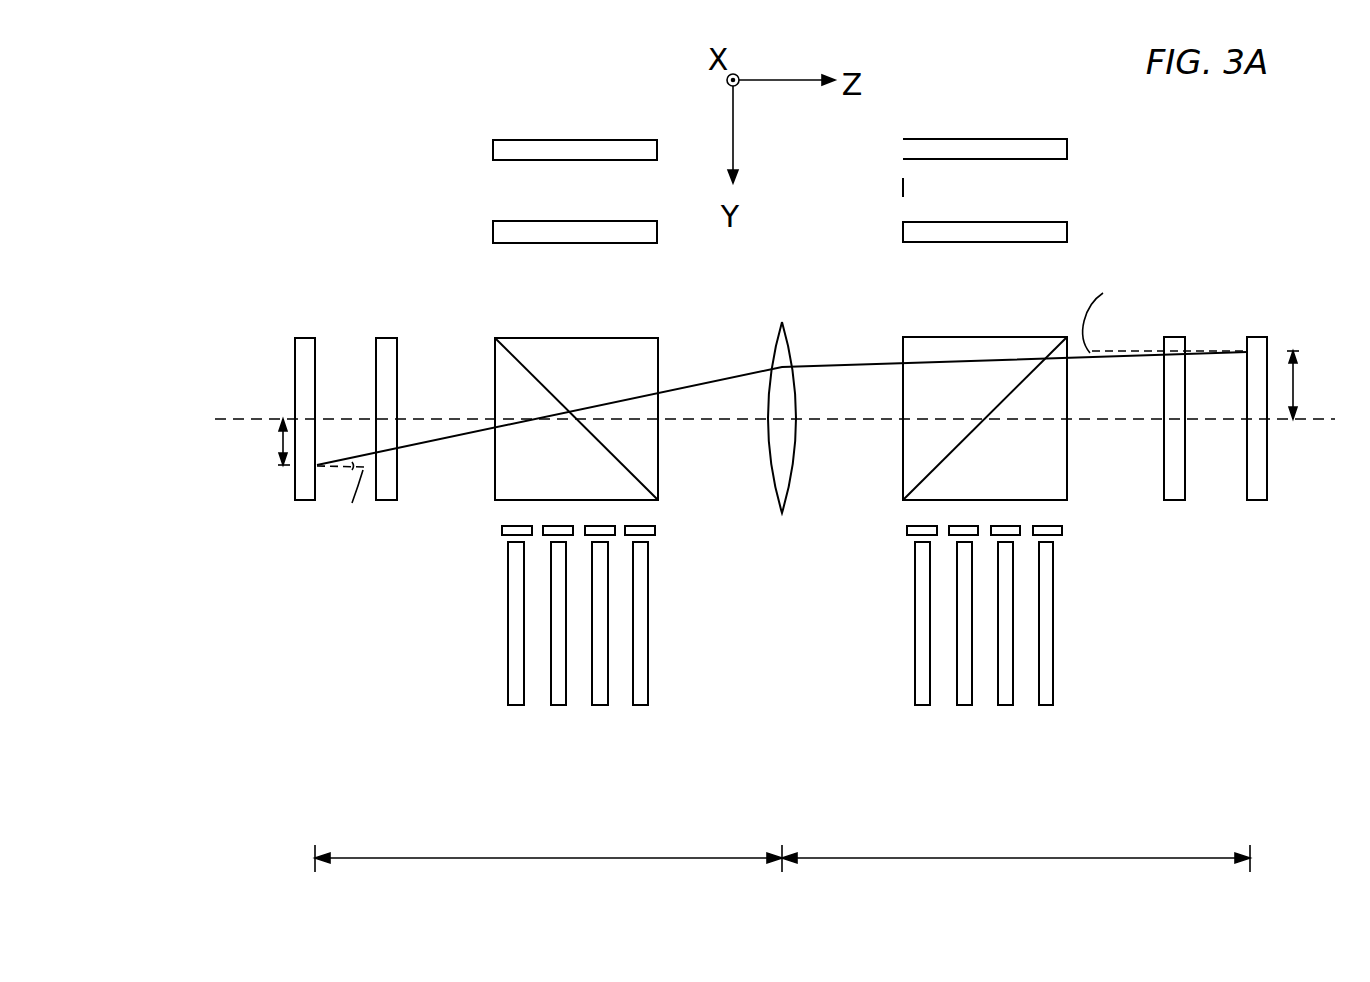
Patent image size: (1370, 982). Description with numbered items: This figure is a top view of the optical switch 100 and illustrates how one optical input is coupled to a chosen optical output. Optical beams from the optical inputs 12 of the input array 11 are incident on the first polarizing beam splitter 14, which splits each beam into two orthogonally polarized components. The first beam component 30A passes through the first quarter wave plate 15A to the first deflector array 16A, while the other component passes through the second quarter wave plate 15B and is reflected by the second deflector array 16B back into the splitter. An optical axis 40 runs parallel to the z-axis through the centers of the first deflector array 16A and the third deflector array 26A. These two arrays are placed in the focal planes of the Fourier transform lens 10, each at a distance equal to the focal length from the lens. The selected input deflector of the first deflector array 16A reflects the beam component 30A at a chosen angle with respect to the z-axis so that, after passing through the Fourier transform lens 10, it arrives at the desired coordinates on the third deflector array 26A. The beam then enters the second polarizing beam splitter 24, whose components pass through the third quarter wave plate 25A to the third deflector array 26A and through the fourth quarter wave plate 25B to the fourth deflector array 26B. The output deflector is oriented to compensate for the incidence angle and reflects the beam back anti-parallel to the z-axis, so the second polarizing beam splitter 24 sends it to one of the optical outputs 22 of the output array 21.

The optical switch 100 is at (1240, 222).
The optical axis 40 is at (252, 418).
The Fourier transform lens 10 is at (790, 470).
The input array 11 is at (601, 588).
The optical inputs 12 is at (608, 685).
The first polarizing beam splitter 14 is at (660, 484).
The first quarter wave plate 15A is at (382, 500).
The first deflector array 16A is at (305, 500).
The second quarter wave plate 15B is at (493, 225).
The second deflector array 16B is at (493, 145).
The output array 21 is at (1021, 588).
The optical outputs 22 is at (1013, 677).
The second polarizing beam splitter 24 is at (1067, 468).
The third quarter wave plate 25A is at (1174, 500).
The third deflector array 26A is at (1256, 500).
The fourth quarter wave plate 25B is at (1067, 230).
The fourth deflector array 26B is at (1067, 148).
The first beam component 30A is at (437, 438).